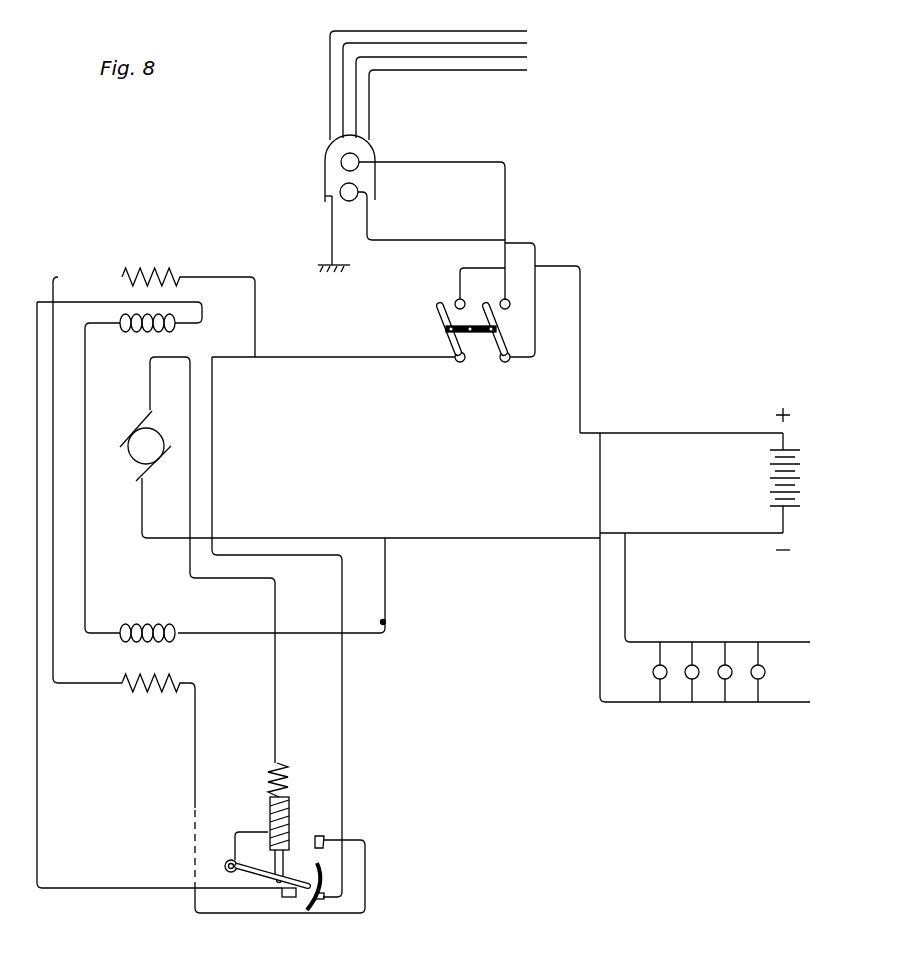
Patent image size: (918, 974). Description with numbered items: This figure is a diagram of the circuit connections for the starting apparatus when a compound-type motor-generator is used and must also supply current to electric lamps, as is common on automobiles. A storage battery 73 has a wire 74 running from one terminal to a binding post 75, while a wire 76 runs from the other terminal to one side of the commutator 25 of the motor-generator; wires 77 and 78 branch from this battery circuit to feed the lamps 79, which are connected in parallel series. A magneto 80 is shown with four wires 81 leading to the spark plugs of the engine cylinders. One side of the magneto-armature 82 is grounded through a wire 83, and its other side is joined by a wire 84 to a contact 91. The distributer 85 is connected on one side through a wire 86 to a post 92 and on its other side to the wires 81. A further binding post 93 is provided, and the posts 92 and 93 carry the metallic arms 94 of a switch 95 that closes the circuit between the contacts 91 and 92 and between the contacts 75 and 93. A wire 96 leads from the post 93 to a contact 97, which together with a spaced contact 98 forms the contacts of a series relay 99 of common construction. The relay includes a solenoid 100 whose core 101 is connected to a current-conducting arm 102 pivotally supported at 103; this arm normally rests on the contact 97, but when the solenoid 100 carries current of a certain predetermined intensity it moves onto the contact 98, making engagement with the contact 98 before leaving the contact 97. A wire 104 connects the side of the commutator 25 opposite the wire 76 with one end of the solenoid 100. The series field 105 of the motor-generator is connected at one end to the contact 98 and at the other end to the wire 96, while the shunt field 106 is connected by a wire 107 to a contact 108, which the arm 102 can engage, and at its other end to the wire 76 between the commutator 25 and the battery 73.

The commutator 25 is at (138, 463).
The storage battery 73 is at (770, 487).
The wire 74 is at (583, 432).
The binding post 75 is at (455, 300).
The wire 76 is at (172, 540).
The wire 77 is at (600, 498).
The wire 78 is at (625, 597).
The lamps 79 is at (665, 665).
The magneto 80 is at (330, 176).
The wires 81 is at (369, 113).
The magneto-armature 82 is at (342, 196).
The wire 83 is at (332, 243).
The wire 84 is at (400, 241).
The distributer 85 is at (358, 157).
The wire 86 is at (506, 223).
The contact 91 is at (510, 361).
The post 92 is at (507, 300).
The binding post 93 is at (458, 363).
The metallic arms 94 is at (440, 320).
The switch 95 is at (481, 342).
The wire 96 is at (318, 360).
The contact 97 is at (324, 903).
The contact 98 is at (322, 833).
The series relay 99 is at (259, 811).
The solenoid 100 is at (290, 793).
The core 101 is at (287, 845).
The current-conducting arm 102 is at (257, 876).
The pivot 103 is at (227, 861).
The wire 104 is at (192, 412).
The series field 105 is at (258, 328).
The shunt field 106 is at (85, 598).
The wire 107 is at (40, 779).
The contact 108 is at (287, 898).